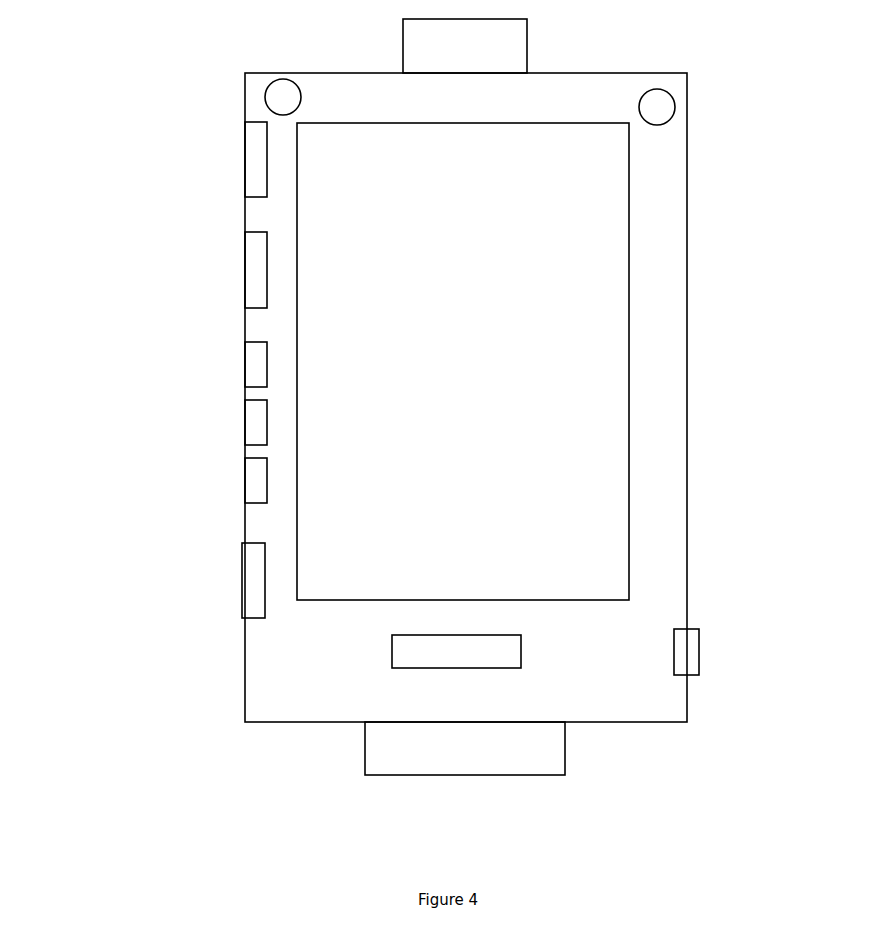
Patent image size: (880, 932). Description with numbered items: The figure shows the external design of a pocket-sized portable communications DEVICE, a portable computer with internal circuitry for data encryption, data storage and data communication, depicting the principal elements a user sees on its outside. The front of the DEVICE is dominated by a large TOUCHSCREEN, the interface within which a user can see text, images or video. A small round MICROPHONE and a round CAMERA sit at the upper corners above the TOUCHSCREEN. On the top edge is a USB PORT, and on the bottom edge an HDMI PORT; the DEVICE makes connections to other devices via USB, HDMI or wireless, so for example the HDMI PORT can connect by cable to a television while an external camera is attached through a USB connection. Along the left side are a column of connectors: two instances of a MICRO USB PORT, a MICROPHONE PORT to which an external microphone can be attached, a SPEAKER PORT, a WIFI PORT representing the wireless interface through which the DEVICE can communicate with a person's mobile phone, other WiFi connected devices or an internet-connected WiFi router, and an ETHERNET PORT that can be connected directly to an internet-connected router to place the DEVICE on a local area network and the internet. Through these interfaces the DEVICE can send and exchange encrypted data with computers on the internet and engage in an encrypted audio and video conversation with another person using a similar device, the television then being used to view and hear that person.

The portable communications device DEVICE is at (663, 267).
The touchscreen TOUCHSCREEN is at (605, 465).
The USB port USB PORT is at (415, 37).
The HDMI port HDMI PORT is at (372, 757).
The microphone MICROPHONE is at (265, 93).
The camera CAMERA is at (660, 106).
The micro USB port MICRO USB PORT is at (255, 147).
The microphone port MICROPHONE PORT is at (255, 362).
The speaker port SPEAKER PORT is at (255, 418).
The WiFi port WIFI PORT is at (255, 477).
The Ethernet port ETHERNET PORT is at (255, 567).